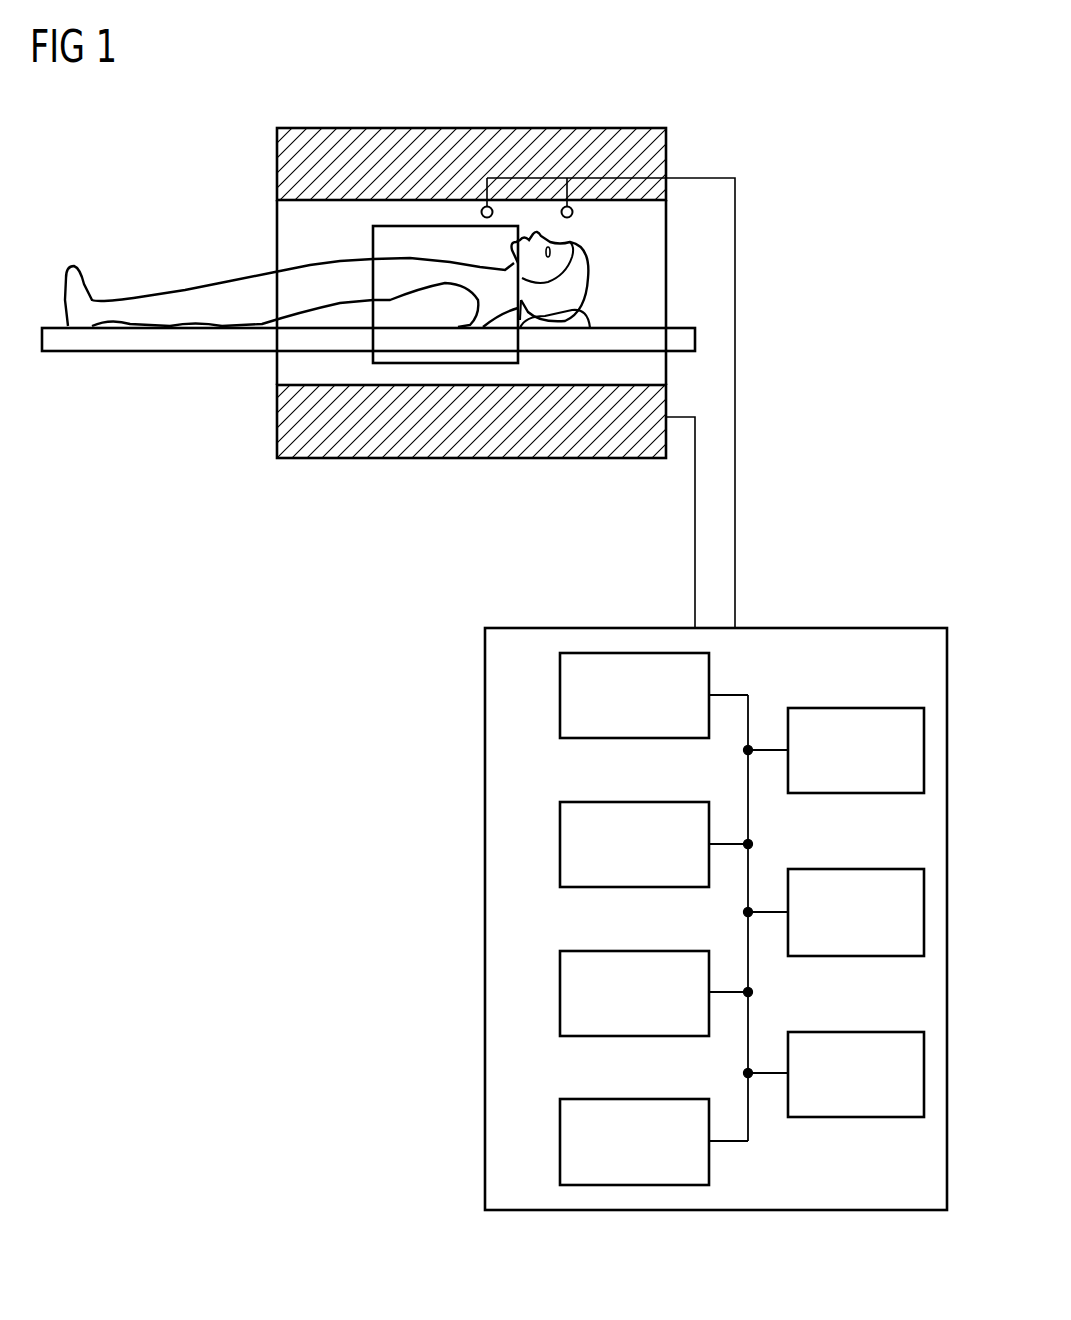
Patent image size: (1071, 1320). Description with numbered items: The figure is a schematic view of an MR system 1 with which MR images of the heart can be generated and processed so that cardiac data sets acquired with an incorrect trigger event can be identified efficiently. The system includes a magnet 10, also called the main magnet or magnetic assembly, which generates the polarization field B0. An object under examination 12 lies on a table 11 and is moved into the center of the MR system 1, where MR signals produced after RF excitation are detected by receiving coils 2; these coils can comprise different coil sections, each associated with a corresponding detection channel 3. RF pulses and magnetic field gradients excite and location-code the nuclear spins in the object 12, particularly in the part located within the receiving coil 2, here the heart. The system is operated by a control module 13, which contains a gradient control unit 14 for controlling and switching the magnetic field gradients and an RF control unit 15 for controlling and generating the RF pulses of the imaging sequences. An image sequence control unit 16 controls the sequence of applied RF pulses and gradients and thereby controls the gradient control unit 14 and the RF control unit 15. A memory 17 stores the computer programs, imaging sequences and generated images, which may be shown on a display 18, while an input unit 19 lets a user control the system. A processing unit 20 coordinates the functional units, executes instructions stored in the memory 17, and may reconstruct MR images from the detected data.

The MR system 1 is at (712, 148).
The receiving coils 2 is at (373, 246).
The detection channel 3 is at (494, 212).
The magnet 10 is at (473, 128).
The table 11 is at (54, 327).
The object under examination 12 is at (70, 262).
The control module 13 is at (830, 628).
The gradient control unit 14 is at (560, 695).
The RF control unit 15 is at (560, 844).
The image sequence control unit 16 is at (857, 708).
The memory 17 is at (560, 993).
The display 18 is at (857, 869).
The input unit 19 is at (857, 1032).
The processing unit 20 is at (560, 1142).